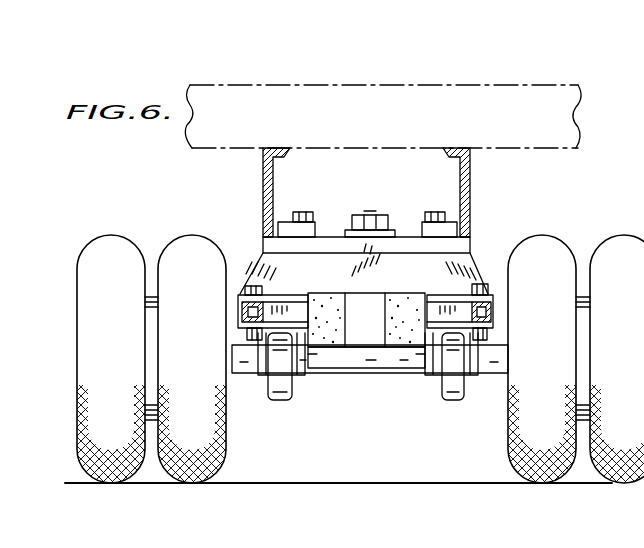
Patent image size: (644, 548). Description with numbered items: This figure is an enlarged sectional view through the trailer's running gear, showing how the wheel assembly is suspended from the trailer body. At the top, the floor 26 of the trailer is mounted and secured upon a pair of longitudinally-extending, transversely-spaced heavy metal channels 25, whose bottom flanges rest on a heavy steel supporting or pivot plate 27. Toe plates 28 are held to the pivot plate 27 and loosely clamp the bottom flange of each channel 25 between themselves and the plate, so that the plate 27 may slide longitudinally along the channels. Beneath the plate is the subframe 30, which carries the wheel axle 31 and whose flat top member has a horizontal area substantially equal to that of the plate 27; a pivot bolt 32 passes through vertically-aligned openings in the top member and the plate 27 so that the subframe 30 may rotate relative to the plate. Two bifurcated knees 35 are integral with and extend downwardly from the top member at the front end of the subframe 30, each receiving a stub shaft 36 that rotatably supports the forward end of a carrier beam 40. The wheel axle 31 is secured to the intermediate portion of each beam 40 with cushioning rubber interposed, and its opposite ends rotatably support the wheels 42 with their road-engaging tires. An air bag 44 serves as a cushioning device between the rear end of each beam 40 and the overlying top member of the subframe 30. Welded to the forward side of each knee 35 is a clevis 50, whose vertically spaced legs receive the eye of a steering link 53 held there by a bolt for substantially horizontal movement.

The channel 25 is at (262, 176).
The floor 26 is at (421, 102).
The pivot plate 27 is at (262, 246).
The toe plate 28 is at (287, 226).
The subframe 30 is at (482, 258).
The wheel axle 31 is at (494, 368).
The pivot bolt 32 is at (366, 224).
The bifurcated knee 35 is at (265, 380).
The stub shaft 36 is at (420, 367).
The carrier beam 40 is at (280, 403).
The wheel 42 is at (170, 244).
The air bag 44 is at (390, 318).
The clevis 50 is at (296, 297).
The steering link 53 is at (241, 312).